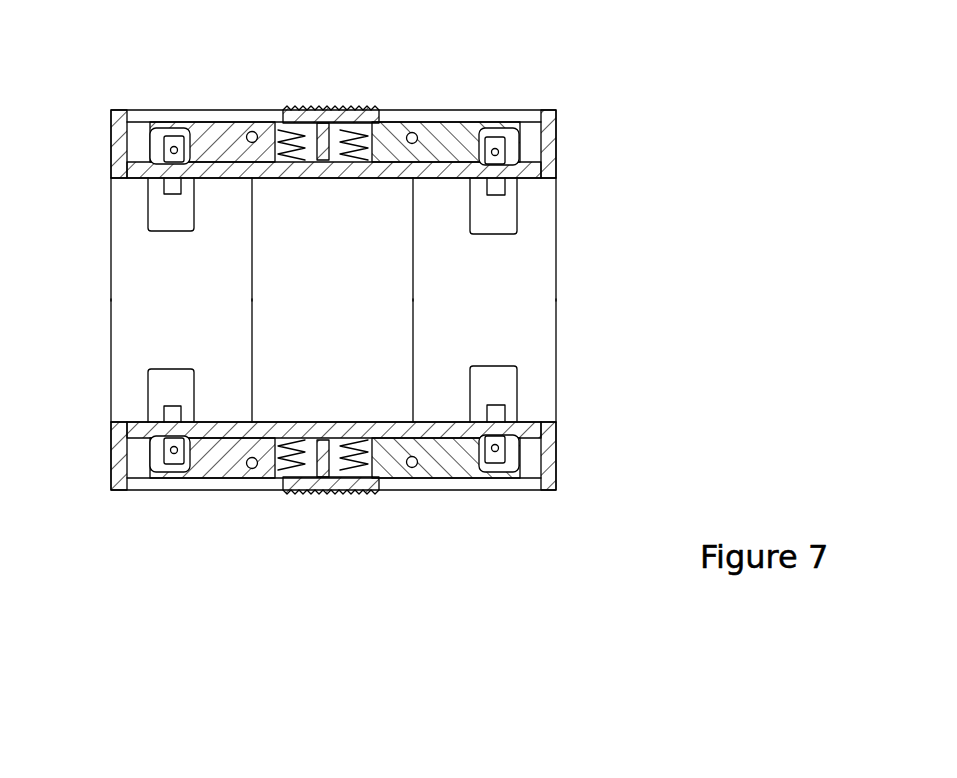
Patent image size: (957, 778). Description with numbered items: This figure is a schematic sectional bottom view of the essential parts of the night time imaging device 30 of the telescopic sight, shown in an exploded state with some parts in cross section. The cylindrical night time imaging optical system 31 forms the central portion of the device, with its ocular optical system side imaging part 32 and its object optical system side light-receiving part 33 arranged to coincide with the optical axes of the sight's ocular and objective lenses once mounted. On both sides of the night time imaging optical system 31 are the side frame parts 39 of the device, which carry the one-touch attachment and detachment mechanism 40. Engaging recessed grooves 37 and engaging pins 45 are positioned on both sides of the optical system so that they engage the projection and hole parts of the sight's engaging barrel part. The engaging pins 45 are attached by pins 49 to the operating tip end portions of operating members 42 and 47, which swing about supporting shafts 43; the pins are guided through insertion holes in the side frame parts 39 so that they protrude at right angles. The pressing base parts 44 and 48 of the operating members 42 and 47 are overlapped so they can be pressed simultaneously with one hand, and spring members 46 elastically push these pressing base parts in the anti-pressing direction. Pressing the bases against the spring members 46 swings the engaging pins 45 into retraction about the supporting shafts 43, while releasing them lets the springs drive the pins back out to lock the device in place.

The night time imaging device 30 is at (557, 300).
The night time imaging optical system 31 is at (282, 272).
The ocular optical system side imaging part 32 is at (250, 332).
The object optical system side light-receiving part 33 is at (415, 333).
The engaging recessed groove 37 is at (148, 215).
The side frame part 39 is at (176, 118).
The one-touch attachment and detachment mechanism 40 is at (542, 133).
The operating member 42 is at (470, 118).
The supporting shaft 43 is at (251, 131).
The pressing base part 44 is at (330, 107).
The engaging pin 45 is at (165, 190).
The spring member 46 is at (268, 122).
The operating member 47 is at (172, 115).
The pressing base part 48 is at (283, 108).
The pin 49 is at (160, 145).